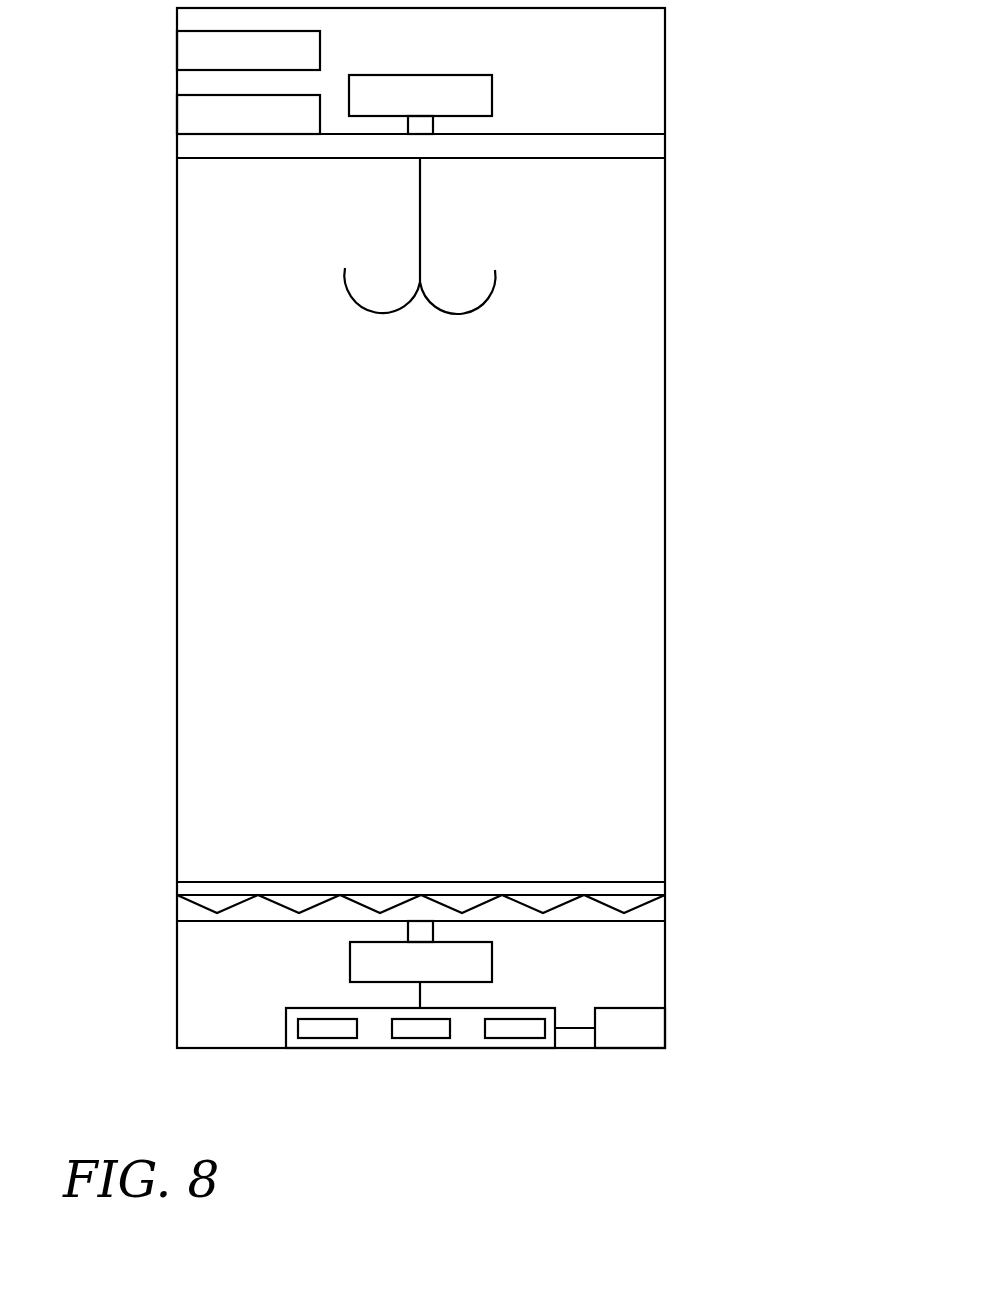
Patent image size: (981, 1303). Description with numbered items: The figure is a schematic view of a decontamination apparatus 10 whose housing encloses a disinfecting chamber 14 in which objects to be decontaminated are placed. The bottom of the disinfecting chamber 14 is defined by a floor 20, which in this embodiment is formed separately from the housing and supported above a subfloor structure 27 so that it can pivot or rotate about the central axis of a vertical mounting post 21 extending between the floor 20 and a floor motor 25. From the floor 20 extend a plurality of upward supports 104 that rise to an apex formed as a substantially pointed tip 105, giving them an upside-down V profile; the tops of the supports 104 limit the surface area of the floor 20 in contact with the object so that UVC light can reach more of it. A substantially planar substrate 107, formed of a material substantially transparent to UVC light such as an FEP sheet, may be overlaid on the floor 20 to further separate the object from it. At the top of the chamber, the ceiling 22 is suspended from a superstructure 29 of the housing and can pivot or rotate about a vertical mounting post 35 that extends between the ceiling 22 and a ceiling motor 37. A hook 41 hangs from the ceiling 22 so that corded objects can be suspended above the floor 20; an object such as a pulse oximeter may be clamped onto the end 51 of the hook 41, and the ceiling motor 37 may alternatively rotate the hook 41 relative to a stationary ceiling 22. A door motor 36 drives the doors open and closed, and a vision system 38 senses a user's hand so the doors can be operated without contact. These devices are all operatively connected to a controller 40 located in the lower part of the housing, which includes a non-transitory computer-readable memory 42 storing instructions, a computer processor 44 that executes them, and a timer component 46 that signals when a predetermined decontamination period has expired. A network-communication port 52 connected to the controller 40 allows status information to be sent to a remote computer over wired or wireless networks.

The decontamination apparatus 10 is at (760, 432).
The disinfecting chamber 14 is at (349, 557).
The floor 20 is at (652, 908).
The vertical mounting post 21 is at (408, 930).
The ceiling 22 is at (635, 146).
The floor motor 25 is at (483, 960).
The subfloor structure 27 is at (195, 1046).
The superstructure 29 is at (645, 8).
The vertical mounting post 35 is at (425, 125).
The door motor 36 is at (195, 117).
The ceiling motor 37 is at (482, 73).
The vision system 38 is at (193, 52).
The controller 40 is at (286, 1028).
The hook 41 is at (488, 292).
The non-transitory computer-readable memory 42 is at (313, 1030).
The computer processor 44 is at (408, 1033).
The timer component 46 is at (527, 1032).
The end of hook 51 is at (345, 268).
The network-communication port 52 is at (648, 1037).
The supports 104 is at (513, 912).
The pointed tip 105 is at (585, 897).
The substantially planar substrate 107 is at (655, 890).